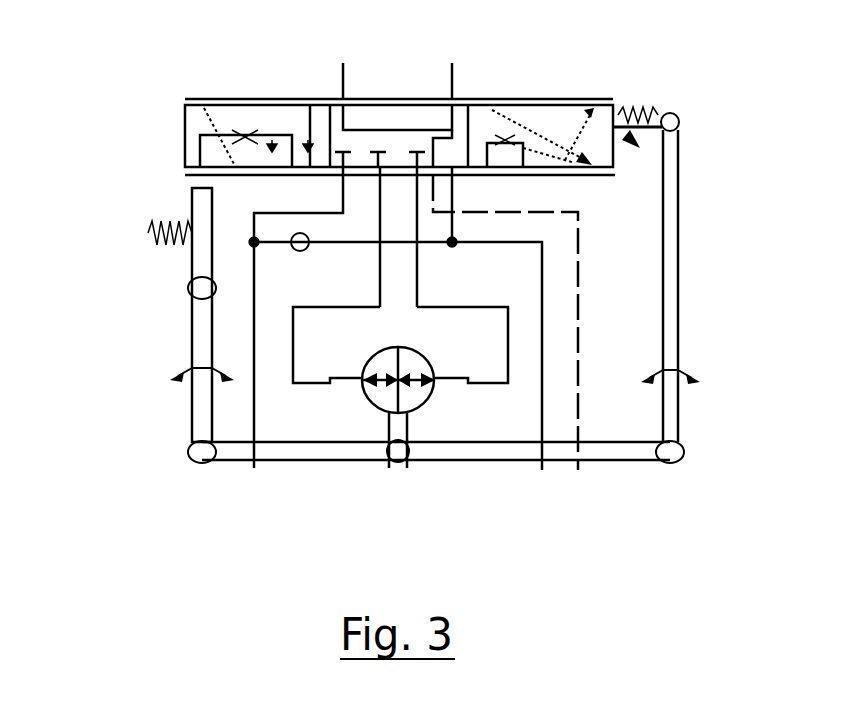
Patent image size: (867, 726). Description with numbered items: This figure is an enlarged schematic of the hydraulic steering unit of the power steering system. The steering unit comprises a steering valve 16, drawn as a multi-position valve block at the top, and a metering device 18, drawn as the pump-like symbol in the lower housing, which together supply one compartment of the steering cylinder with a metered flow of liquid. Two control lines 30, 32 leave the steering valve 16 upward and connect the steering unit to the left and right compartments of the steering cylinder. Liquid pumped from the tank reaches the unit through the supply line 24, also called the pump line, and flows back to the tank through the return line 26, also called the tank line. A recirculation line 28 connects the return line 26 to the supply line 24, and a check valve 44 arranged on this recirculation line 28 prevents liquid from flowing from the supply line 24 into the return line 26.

The steering valve 16 is at (166, 125).
The control line 30 is at (337, 59).
The control line 32 is at (457, 59).
The check valve 44 is at (282, 230).
The supply line 24 is at (255, 467).
The recirculation line 28 is at (340, 244).
The return line 26 is at (542, 468).
The metering device 18 is at (433, 390).